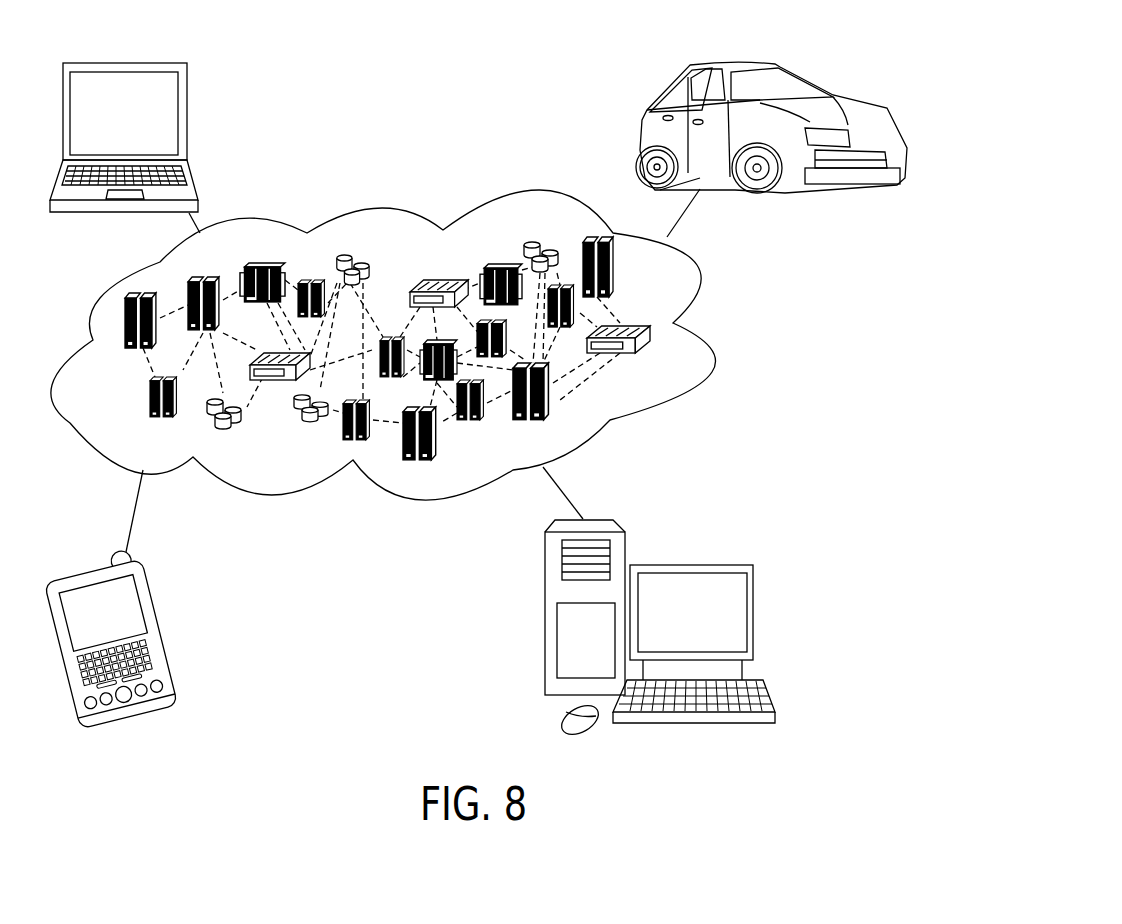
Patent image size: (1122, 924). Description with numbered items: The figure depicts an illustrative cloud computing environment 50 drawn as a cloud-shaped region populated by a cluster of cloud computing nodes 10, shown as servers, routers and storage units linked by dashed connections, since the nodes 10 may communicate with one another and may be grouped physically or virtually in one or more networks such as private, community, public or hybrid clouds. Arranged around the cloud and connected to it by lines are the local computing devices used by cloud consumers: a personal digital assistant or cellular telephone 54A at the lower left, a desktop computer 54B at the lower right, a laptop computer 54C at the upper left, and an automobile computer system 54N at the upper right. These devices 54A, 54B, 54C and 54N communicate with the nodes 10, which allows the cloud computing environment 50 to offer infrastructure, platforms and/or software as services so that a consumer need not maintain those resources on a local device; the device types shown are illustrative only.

The cloud computing nodes 10 is at (668, 377).
The cloud computing environment 50 is at (707, 285).
The personal digital assistant (PDA) or cellular telephone 54A is at (160, 610).
The desktop computer 54B is at (753, 610).
The laptop computer 54C is at (187, 115).
The automobile computer system 54N is at (820, 83).